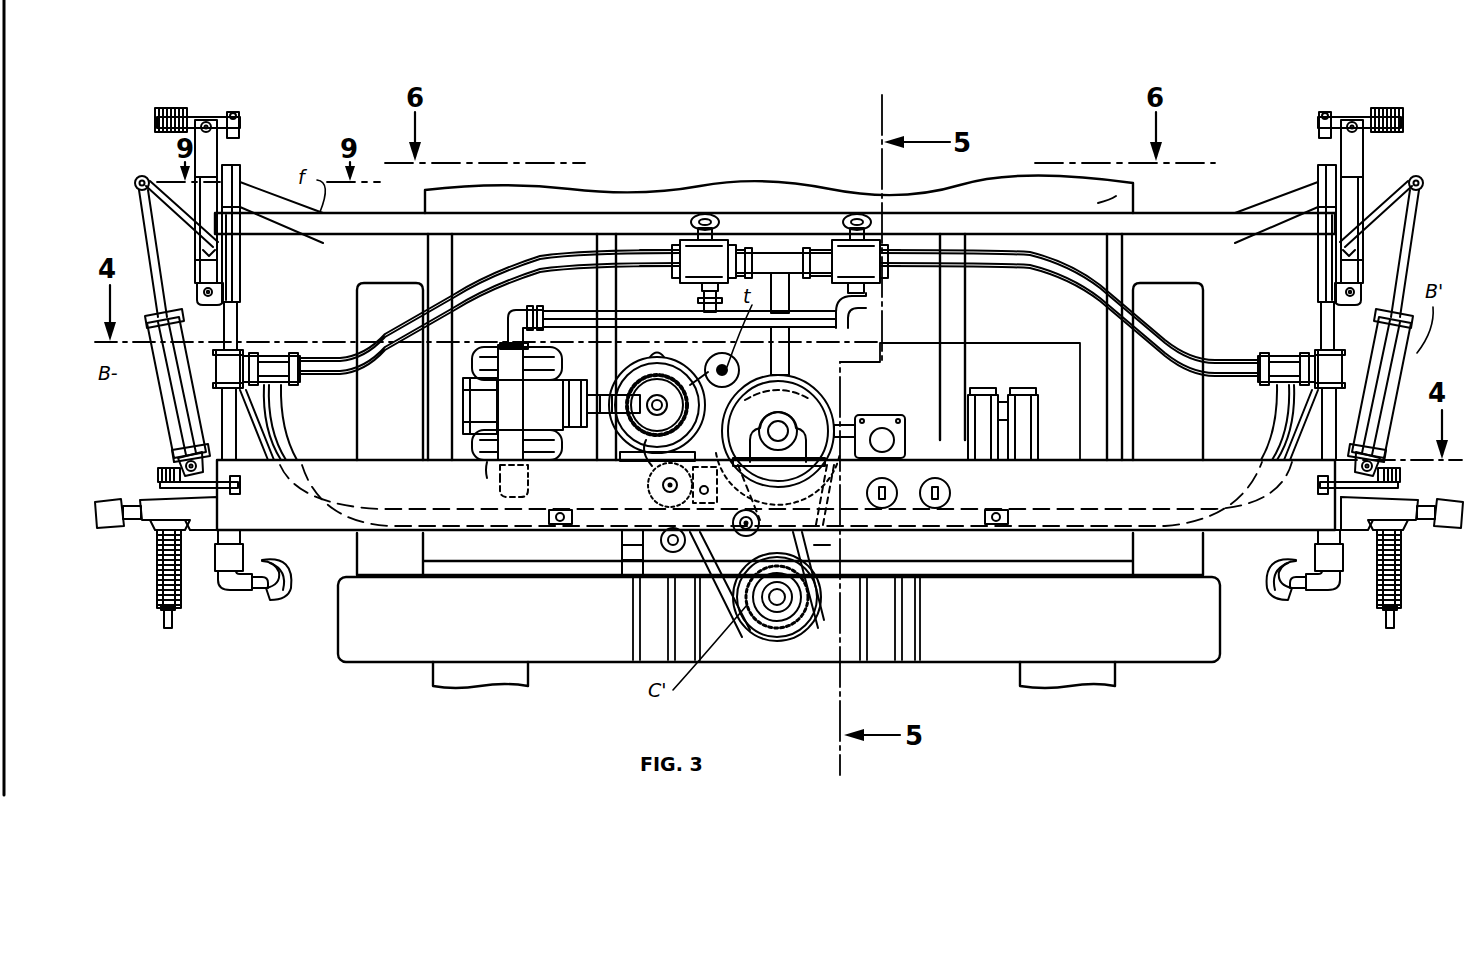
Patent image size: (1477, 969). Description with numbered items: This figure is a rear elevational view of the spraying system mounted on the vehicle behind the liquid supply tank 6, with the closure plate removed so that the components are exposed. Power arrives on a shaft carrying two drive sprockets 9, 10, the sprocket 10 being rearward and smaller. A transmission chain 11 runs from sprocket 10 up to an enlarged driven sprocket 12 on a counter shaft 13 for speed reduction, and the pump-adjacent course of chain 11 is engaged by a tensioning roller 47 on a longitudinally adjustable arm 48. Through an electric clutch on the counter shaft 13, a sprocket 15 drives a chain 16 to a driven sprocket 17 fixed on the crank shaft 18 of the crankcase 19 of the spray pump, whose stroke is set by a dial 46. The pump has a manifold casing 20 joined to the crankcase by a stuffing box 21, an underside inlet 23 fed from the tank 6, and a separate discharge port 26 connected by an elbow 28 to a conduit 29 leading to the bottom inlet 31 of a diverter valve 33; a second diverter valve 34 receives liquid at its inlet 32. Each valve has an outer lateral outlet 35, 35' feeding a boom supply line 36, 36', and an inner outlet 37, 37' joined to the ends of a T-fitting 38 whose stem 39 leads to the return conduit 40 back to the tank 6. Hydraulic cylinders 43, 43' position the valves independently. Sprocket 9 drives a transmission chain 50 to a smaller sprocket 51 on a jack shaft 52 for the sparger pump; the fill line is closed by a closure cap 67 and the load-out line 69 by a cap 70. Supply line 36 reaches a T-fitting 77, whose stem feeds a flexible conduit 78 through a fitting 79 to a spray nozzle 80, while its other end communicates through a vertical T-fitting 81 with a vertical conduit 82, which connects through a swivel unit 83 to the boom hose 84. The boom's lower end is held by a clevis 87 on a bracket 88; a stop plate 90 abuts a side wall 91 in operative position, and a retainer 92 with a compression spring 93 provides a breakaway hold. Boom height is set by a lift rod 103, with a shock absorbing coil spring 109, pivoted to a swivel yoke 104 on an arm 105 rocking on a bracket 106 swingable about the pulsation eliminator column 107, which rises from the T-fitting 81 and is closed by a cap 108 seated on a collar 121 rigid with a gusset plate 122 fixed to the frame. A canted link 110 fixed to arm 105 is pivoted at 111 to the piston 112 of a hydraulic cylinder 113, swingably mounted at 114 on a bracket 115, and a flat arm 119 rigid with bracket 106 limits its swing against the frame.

The drive sprocket 9 is at (783, 644).
The drive sprocket 10 is at (798, 601).
The transmission chain 11 is at (830, 545).
The driven sprocket 12 is at (828, 417).
The counter shaft 13 is at (782, 428).
The sprocket 15 is at (786, 497).
The chain 16 is at (726, 372).
The driven sprocket 17 is at (648, 466).
The crank shaft 18 is at (636, 384).
The crankcase 19 is at (692, 386).
The manifold casing 20 is at (480, 434).
The pump stuffing box 21 is at (582, 440).
The inlet 23 is at (487, 478).
The discharge port 26 is at (510, 347).
The elbow 28 is at (527, 311).
The conduit 29 is at (605, 313).
The inlet 31 is at (868, 302).
The inlet 32 is at (700, 294).
The diverter valve 33 is at (707, 262).
The diverter valve 34 is at (856, 262).
The lateral outlet 35 is at (929, 227).
The boom supply line 36 is at (1069, 282).
The lateral outlet 35' is at (622, 227).
The boom supply line 36' is at (490, 281).
The inner outlet 37 is at (830, 215).
The inner outlet 37' is at (755, 208).
The T-fitting 38 is at (785, 252).
The stem 39 is at (777, 273).
The return conduit 40 is at (790, 357).
The hydraulic cylinder 43 is at (878, 192).
The hydraulic cylinder 43' is at (707, 189).
The dial 46 is at (647, 442).
The tensioning roller 47 is at (752, 534).
The adjustable arm 48 is at (719, 514).
The transmission chain 50 is at (752, 630).
The sprocket 51 is at (623, 590).
The jack shaft 52 is at (630, 535).
The closure cap 67 is at (935, 508).
The load-out line 69 is at (895, 447).
The cap 70 is at (888, 508).
The T-fitting 77 is at (275, 356).
The flexible conduit 78 is at (283, 443).
The fitting 79 is at (563, 510).
The spray nozzle 80 is at (555, 524).
The T-fitting 81 is at (239, 358).
The vertical conduit 82 is at (228, 427).
The swivel unit 83 is at (236, 580).
The boom hose 84 is at (280, 578).
The clevis 87 is at (128, 521).
The bracket 88 is at (160, 540).
The stop plate 90 is at (236, 500).
The side wall 91 is at (158, 498).
The retainer 92 is at (182, 540).
The compression spring 93 is at (160, 602).
The lift rod 103 is at (243, 122).
The swivel yoke 104 is at (206, 119).
The arm 105 is at (212, 200).
The bracket 106 is at (207, 292).
The pulsation eliminator column 107 is at (225, 318).
The cap 108 is at (245, 170).
The shock absorbing coil spring 109 is at (173, 108).
The link 110 is at (173, 222).
The pivot 111 is at (140, 180).
The piston 112 is at (160, 242).
The hydraulic cylinder 113 is at (160, 395).
The swingable mounting 114 is at (183, 465).
The bracket 115 is at (240, 487).
The flat arm 119 is at (237, 258).
The collar 121 is at (305, 237).
The gusset plate 122 is at (257, 204).
The liquid supply tank 6 is at (1098, 203).